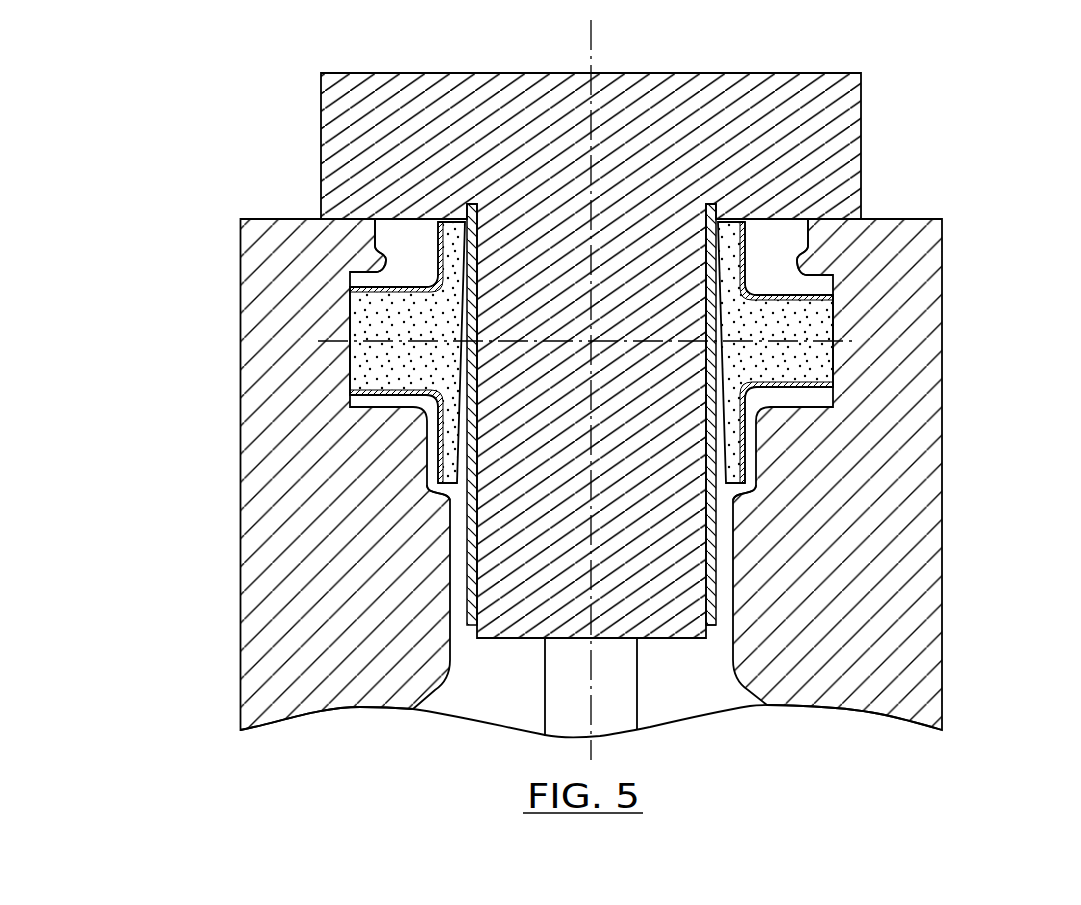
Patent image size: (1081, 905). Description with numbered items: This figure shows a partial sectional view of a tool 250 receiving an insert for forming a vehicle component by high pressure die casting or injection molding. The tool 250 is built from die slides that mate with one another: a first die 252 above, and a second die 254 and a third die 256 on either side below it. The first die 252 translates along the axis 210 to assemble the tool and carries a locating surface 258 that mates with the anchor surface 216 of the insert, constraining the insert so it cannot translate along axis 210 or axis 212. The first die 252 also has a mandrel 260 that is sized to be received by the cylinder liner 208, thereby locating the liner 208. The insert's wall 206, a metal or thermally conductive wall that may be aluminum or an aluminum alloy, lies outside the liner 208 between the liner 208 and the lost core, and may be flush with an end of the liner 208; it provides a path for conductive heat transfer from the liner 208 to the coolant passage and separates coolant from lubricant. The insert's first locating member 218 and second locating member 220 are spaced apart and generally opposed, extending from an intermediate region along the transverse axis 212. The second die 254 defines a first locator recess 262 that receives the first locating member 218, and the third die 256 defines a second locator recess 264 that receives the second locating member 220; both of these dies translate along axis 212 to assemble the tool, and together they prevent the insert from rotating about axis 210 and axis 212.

The tool 250 is at (182, 118).
The first die 252 is at (676, 112).
The second die 254 is at (905, 495).
The third die 256 is at (275, 462).
The locating surface 258 is at (721, 210).
The anchor surface 216 is at (591, 414).
The mandrel 260 is at (671, 459).
The first locator recess 262 is at (818, 265).
The second locator recess 264 is at (362, 268).
The second locating member 220 is at (424, 378).
The first locating member 218 is at (811, 378).
The wall 206 is at (447, 495).
The cylinder liner 208 is at (717, 612).
The axis 210 is at (588, 42).
The axis 212 is at (855, 344).